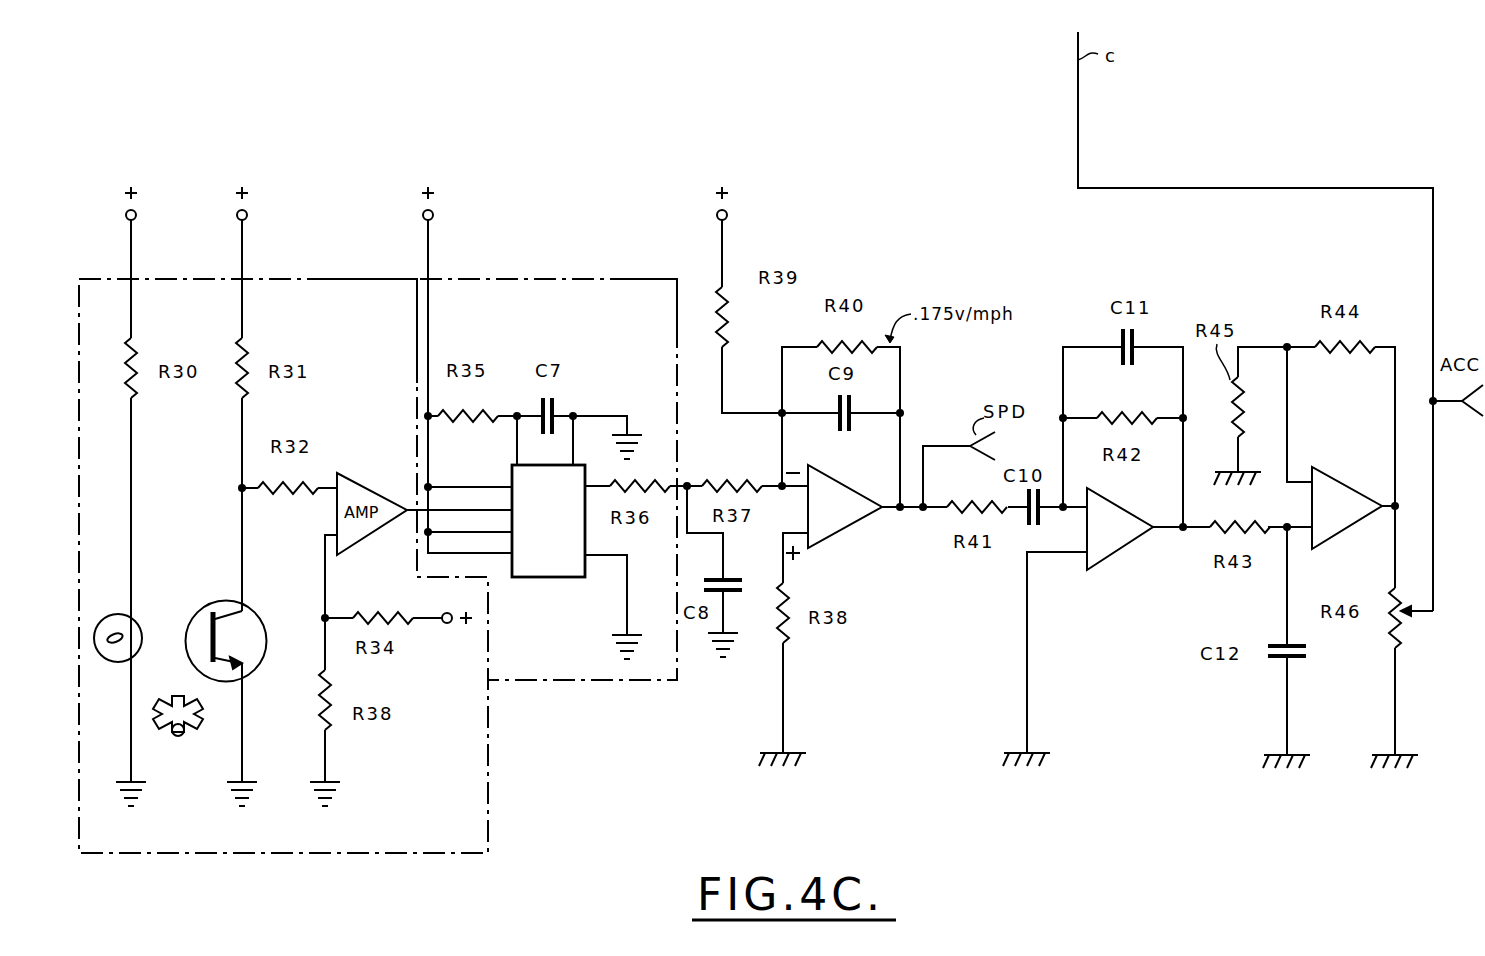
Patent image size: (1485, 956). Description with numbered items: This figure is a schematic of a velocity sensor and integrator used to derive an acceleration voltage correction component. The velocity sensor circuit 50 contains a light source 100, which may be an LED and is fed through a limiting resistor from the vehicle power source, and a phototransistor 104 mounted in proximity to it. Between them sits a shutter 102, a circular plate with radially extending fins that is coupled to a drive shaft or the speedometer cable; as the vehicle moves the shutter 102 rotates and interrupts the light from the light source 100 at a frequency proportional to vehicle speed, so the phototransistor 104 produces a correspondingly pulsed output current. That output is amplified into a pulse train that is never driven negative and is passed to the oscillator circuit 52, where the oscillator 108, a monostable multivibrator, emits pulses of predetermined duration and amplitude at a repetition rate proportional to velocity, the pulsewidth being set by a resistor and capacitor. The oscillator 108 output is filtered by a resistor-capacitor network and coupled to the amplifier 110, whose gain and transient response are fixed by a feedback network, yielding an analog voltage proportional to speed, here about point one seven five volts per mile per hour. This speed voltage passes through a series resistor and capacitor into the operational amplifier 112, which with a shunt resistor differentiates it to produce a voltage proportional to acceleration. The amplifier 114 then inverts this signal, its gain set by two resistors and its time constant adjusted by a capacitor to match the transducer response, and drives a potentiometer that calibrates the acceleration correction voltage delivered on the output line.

The velocity sensor circuit 50 is at (312, 279).
The oscillator circuit 52 is at (521, 279).
The light source 100 is at (142, 630).
The shutter 102 is at (178, 764).
The phototransistor 104 is at (260, 618).
The oscillator 108 is at (545, 577).
The amplifier 110 is at (845, 530).
The operational amplifier 112 is at (1118, 550).
The amplifier 114 is at (1356, 529).